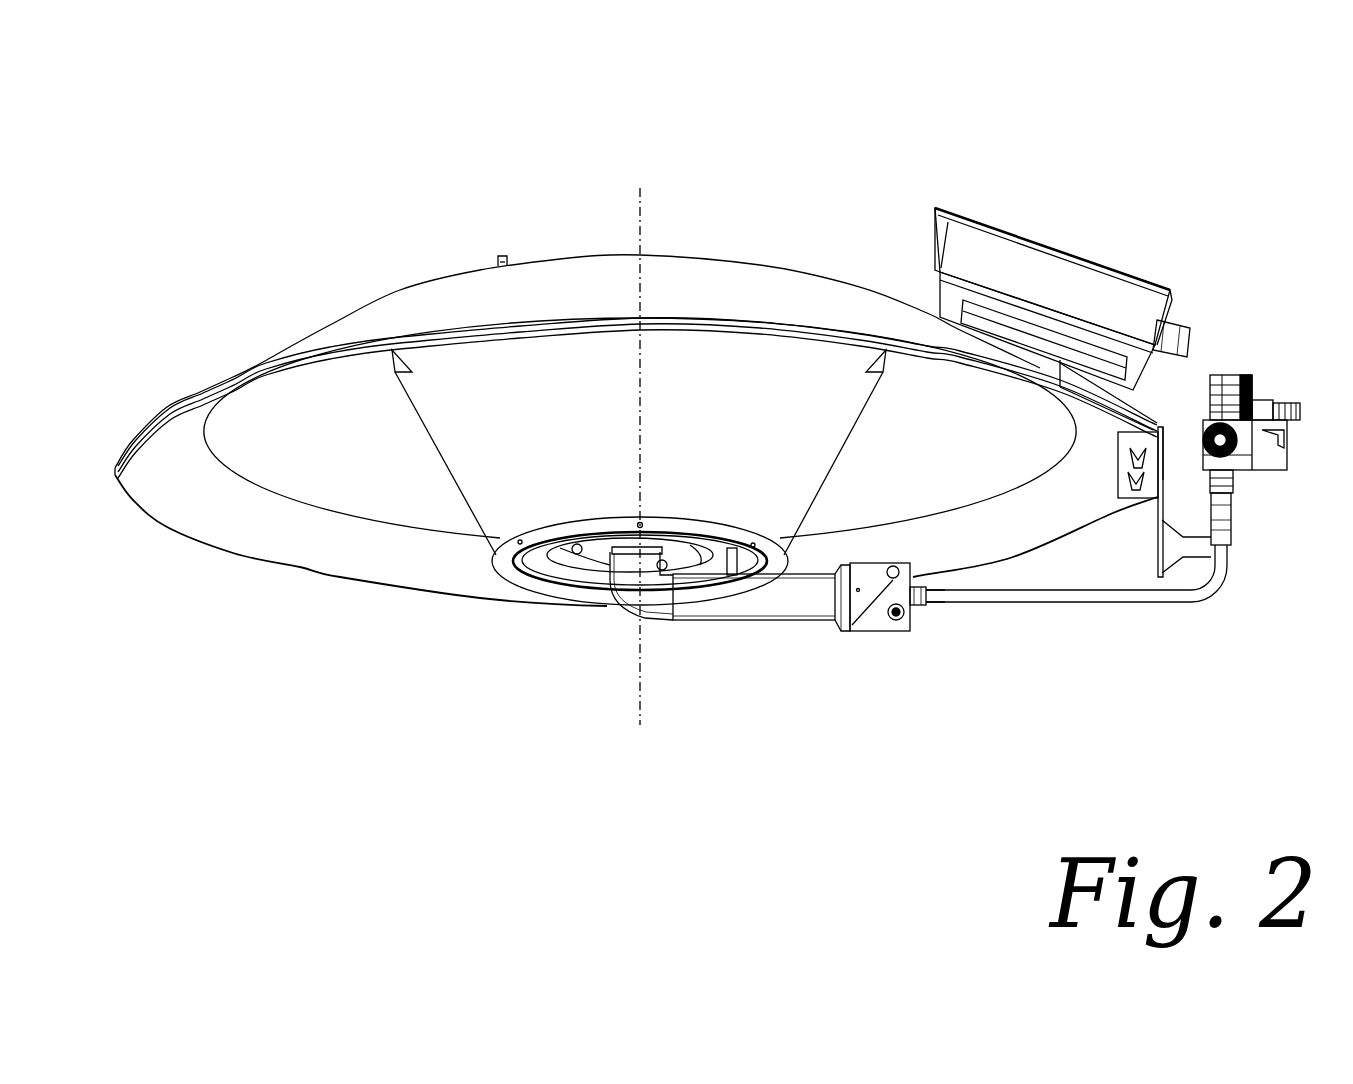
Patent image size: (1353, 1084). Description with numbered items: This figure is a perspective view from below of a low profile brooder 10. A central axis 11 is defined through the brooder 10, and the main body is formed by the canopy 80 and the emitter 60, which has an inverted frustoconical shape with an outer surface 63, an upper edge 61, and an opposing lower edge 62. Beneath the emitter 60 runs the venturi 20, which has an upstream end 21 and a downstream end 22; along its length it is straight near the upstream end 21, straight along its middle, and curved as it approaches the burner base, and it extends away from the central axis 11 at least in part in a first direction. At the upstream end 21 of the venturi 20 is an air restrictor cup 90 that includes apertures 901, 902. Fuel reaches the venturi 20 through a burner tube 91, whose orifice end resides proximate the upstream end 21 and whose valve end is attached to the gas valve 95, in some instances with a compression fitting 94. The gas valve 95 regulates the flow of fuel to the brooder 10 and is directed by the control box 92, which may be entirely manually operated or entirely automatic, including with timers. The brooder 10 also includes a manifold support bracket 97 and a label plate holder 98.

The brooder 10 is at (153, 95).
The central axis 11 is at (640, 207).
The venturi 20 is at (727, 600).
The upstream end 21 is at (840, 622).
The downstream end 22 is at (610, 608).
The emitter 60 is at (455, 430).
The upper edge 61 is at (377, 340).
The lower edge 62 is at (533, 553).
The outer surface 63 is at (593, 445).
The canopy 80 is at (465, 292).
The air restrictor cup 90 is at (880, 612).
The aperture 901 is at (898, 620).
The aperture 902 is at (925, 603).
The burner tube 91 is at (1114, 602).
The control box 92 is at (997, 263).
The compression fitting 94 is at (935, 597).
The gas valve 95 is at (1258, 448).
The manifold support bracket 97 is at (1167, 400).
The label plate holder 98 is at (1140, 400).